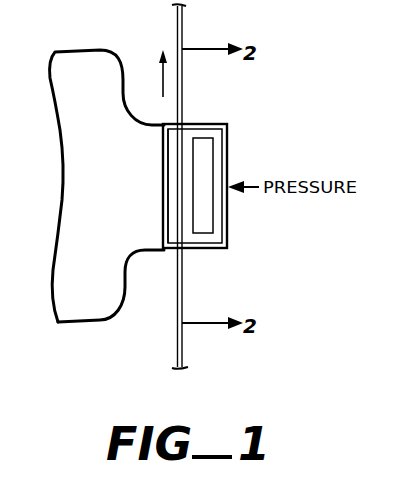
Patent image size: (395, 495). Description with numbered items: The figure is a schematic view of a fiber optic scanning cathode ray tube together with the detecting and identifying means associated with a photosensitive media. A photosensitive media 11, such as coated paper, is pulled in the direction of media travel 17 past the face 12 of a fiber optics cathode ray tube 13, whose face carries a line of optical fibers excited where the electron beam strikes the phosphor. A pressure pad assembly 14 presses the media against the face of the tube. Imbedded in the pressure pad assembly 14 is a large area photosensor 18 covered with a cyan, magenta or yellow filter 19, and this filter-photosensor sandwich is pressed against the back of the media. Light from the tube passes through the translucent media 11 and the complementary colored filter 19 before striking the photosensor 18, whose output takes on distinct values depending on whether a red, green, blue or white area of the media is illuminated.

The photosensitive media 11 is at (178, 285).
The face 12 is at (180, 150).
The fiber optics cathode ray tube 13 is at (108, 200).
The pressure pad assembly 14 is at (211, 252).
The direction of media travel 17 is at (163, 75).
The photosensor 18 is at (207, 200).
The filter 19 is at (190, 174).